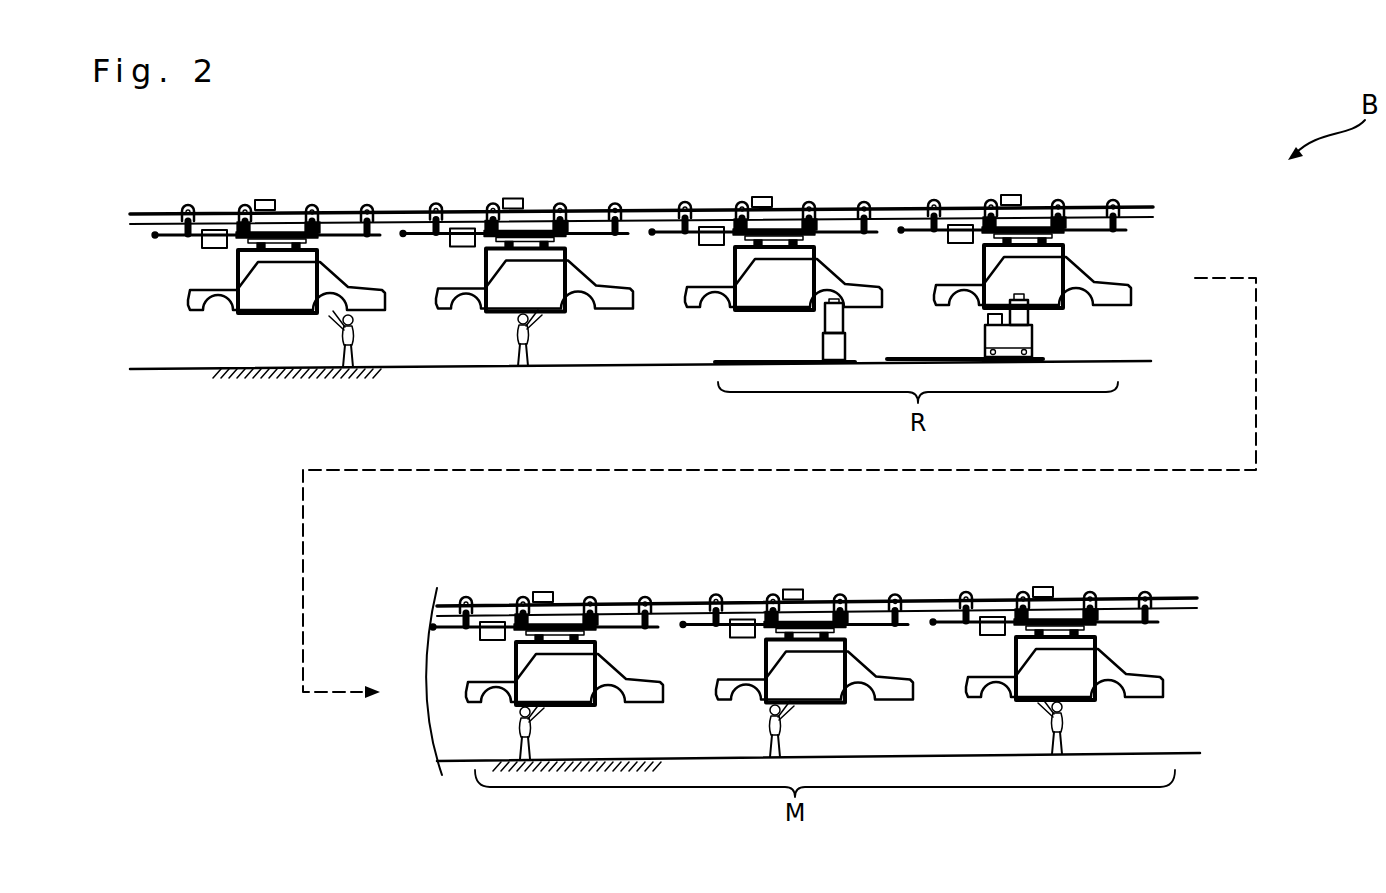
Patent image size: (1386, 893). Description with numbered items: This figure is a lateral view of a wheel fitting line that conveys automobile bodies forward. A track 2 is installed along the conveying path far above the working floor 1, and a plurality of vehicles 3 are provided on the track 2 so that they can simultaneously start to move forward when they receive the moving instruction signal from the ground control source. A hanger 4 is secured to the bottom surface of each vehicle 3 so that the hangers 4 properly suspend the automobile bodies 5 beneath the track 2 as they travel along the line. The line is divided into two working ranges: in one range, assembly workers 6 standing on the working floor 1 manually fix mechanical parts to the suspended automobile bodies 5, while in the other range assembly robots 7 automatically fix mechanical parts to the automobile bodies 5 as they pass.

The working floor 1 is at (676, 759).
The track 2 is at (646, 212).
The vehicle 3 is at (284, 238).
The hanger 4 is at (233, 271).
The automobile body 5 is at (547, 302).
The assembly worker 6 is at (366, 338).
The assembly robot 7 is at (848, 346).